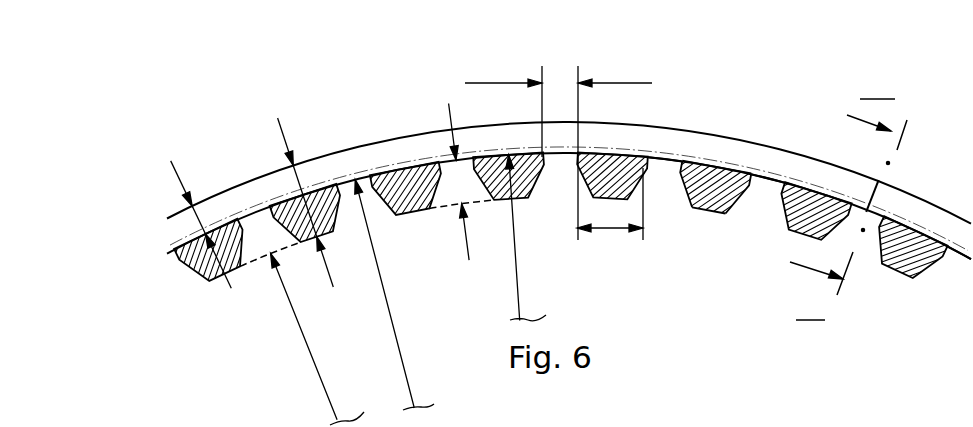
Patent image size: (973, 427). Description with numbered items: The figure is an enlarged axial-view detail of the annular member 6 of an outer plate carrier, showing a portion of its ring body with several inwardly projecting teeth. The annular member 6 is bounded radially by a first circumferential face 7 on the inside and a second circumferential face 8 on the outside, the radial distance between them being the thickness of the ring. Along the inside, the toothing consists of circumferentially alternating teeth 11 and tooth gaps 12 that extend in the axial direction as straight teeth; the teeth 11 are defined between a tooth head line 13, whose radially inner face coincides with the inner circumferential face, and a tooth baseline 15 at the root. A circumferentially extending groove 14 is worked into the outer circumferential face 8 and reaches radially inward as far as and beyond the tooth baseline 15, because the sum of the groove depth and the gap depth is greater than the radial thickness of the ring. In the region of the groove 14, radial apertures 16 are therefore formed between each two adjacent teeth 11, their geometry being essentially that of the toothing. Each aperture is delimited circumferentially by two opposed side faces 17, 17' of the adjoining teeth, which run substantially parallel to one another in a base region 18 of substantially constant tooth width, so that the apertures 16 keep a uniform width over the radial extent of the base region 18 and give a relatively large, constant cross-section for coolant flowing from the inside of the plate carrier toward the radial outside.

The annular member 6 is at (291, 86).
The first circumferential face 7 is at (409, 213).
The second circumferential face 8 is at (368, 145).
The teeth 11 is at (716, 210).
The tooth gaps 12 is at (766, 186).
The tooth head line 13 is at (262, 270).
The groove 14 is at (667, 140).
The tooth baseline 15 is at (955, 256).
The radial apertures 16 is at (667, 163).
The side face 17 is at (676, 215).
The side face 17' is at (743, 226).
The base region 18 is at (718, 174).